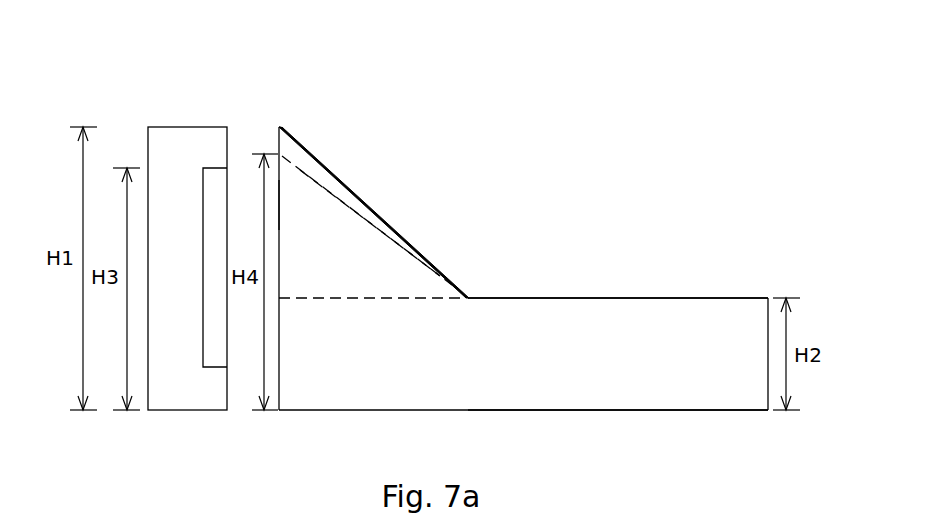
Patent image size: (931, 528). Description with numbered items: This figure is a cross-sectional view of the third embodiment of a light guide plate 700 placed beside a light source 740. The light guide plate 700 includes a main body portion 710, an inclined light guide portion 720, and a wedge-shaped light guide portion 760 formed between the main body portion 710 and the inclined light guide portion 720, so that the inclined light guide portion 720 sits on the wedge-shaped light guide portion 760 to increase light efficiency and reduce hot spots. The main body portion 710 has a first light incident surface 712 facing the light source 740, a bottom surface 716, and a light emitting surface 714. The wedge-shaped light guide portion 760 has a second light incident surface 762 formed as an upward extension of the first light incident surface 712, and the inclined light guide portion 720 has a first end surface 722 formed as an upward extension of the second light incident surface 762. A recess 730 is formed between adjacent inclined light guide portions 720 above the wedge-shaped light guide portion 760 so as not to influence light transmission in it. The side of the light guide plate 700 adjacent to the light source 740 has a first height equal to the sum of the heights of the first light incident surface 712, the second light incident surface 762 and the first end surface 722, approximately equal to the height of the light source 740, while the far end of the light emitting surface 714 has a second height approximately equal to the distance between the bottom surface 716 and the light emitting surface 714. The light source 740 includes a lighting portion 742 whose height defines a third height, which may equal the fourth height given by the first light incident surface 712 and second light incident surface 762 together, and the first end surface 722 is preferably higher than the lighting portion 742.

The light guide plate 700 is at (698, 212).
The main body portion 710 is at (753, 277).
The first light incident surface 712 is at (279, 355).
The light emitting surface 714 is at (617, 298).
The bottom surface 716 is at (625, 410).
The inclined light guide portion 720 is at (322, 162).
The first end surface 722 is at (274, 137).
The recess 730 is at (429, 234).
The light source 740 is at (188, 110).
The lighting portion 742 is at (203, 355).
The wedge-shaped light guide portion 760 is at (350, 258).
The second light incident surface 762 is at (279, 205).